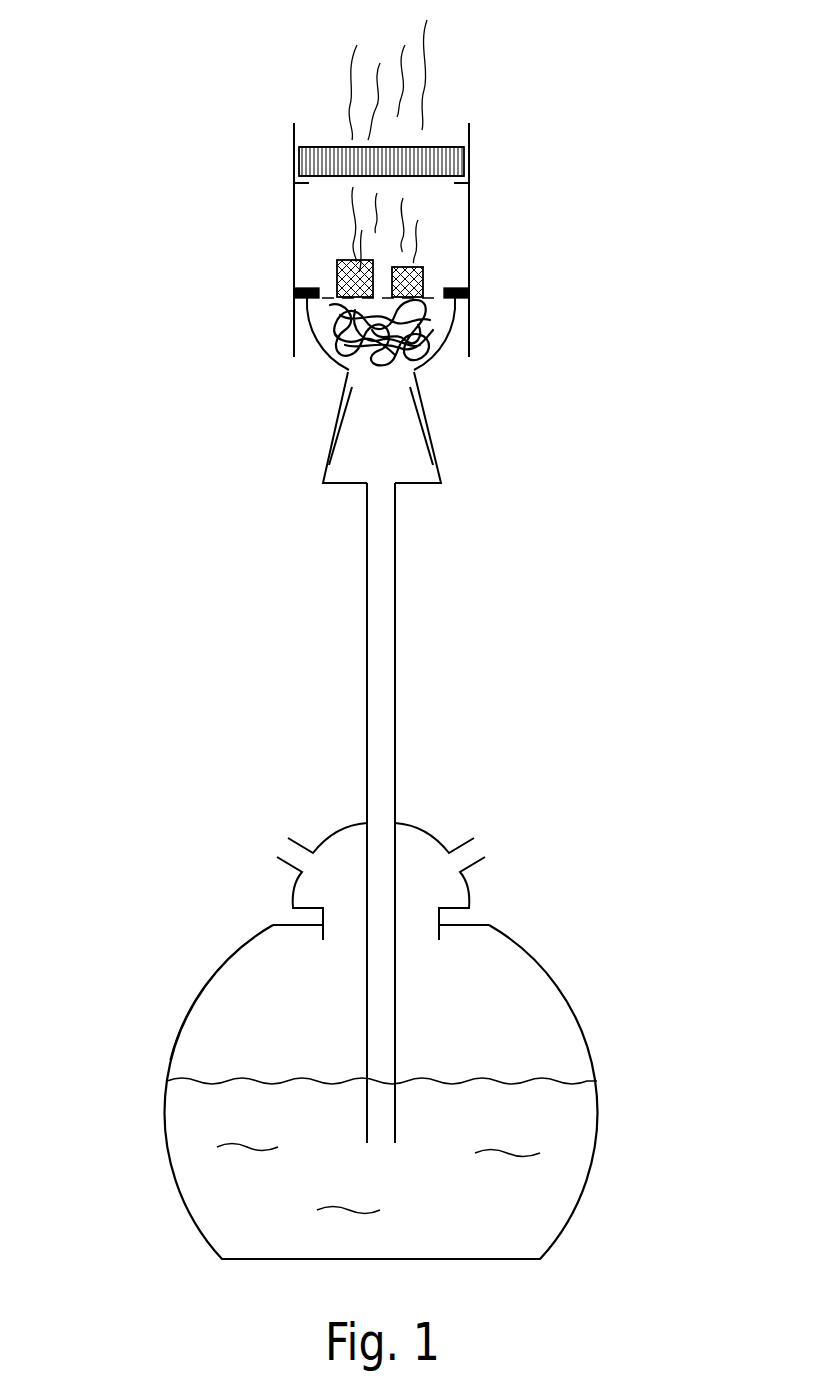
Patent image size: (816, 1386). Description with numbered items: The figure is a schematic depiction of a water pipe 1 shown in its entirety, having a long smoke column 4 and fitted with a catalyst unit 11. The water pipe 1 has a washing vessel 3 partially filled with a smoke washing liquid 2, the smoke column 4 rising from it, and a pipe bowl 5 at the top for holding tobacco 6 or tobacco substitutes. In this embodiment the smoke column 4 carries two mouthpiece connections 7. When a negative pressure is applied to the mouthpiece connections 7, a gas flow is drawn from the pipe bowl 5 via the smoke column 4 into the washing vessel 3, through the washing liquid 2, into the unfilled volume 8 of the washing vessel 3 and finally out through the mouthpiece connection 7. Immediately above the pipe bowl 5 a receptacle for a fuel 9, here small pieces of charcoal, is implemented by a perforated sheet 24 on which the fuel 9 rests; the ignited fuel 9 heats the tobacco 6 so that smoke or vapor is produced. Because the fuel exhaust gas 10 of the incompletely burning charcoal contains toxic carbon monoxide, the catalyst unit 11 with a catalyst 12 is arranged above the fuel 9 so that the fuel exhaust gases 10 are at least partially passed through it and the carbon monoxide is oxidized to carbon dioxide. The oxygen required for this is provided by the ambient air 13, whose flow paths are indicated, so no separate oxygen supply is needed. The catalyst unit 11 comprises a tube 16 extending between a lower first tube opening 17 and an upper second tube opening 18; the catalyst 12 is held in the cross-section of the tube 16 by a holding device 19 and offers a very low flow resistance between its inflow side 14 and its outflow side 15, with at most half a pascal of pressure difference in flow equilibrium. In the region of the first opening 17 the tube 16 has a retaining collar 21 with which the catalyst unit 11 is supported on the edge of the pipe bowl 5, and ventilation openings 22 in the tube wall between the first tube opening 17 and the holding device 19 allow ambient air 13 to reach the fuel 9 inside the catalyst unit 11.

The water pipe 1 is at (110, 115).
The smoke washing liquid 2 is at (572, 1127).
The washing vessel 3 is at (573, 1008).
The smoke column 4 is at (396, 585).
The pipe bowl 5 is at (430, 427).
The tobacco 6 is at (417, 353).
The mouthpiece connection 7 is at (287, 851).
The unfilled volume 8 is at (227, 998).
The fuel 9 is at (355, 278).
The fuel exhaust gas 10 is at (345, 222).
The catalyst unit 11 is at (510, 145).
The catalyst 12 is at (447, 163).
The ambient air 13 is at (451, 233).
The inflow side 14 is at (333, 183).
The outflow side 15 is at (329, 133).
The tube 16 is at (469, 343).
The first tube opening 17 is at (302, 376).
The second tube opening 18 is at (446, 106).
The holding device 19 is at (455, 182).
The retaining collar 21 is at (294, 292).
The ventilation openings 22 is at (469, 225).
The perforated sheet 24 is at (469, 313).